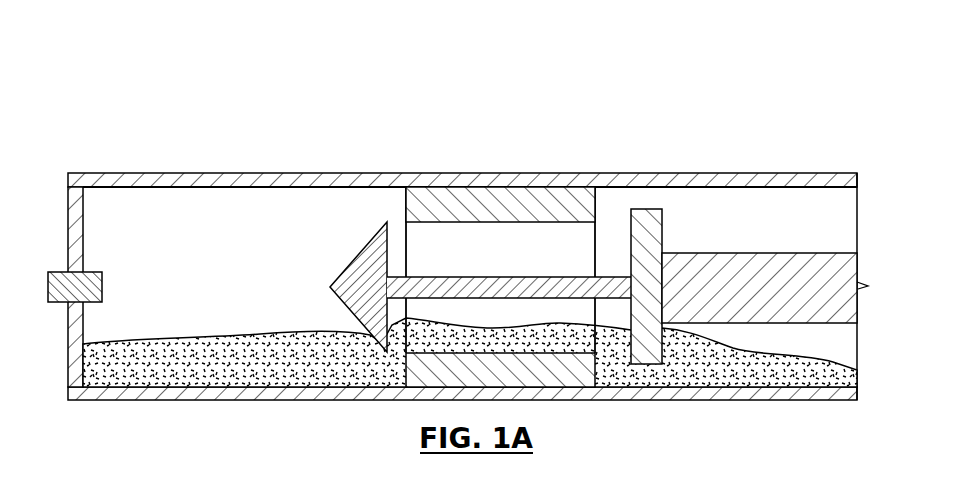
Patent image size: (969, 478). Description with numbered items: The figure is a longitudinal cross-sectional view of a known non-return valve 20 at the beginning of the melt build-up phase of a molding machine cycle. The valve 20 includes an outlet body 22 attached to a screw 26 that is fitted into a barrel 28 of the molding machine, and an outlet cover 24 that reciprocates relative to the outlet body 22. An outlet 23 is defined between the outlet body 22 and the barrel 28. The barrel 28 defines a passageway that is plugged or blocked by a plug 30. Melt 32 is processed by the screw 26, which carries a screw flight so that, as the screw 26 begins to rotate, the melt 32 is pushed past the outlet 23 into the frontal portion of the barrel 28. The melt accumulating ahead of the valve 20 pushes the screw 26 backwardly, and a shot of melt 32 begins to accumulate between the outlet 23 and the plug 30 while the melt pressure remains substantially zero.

The non-return valve 20 is at (458, 209).
The outlet body 22 is at (650, 226).
The outlet 23 is at (638, 198).
The outlet cover 24 is at (555, 207).
The screw 26 is at (770, 268).
The barrel 28 is at (482, 178).
The plug 30 is at (103, 279).
The melt 32 is at (270, 334).